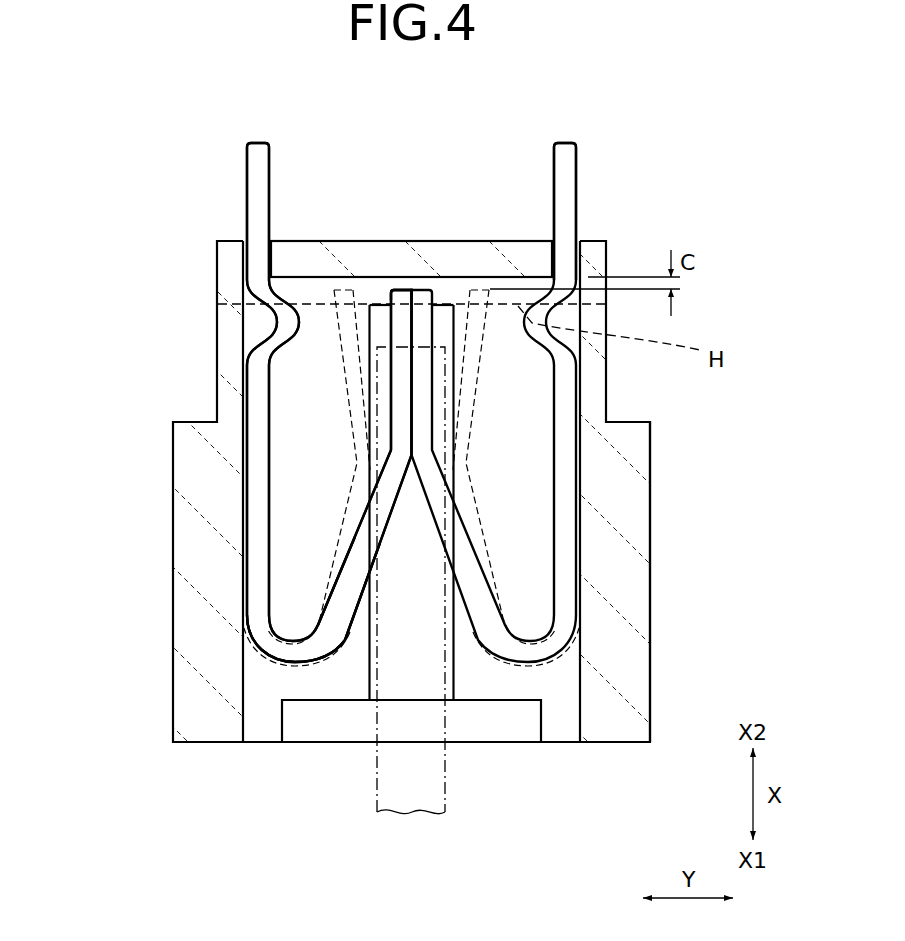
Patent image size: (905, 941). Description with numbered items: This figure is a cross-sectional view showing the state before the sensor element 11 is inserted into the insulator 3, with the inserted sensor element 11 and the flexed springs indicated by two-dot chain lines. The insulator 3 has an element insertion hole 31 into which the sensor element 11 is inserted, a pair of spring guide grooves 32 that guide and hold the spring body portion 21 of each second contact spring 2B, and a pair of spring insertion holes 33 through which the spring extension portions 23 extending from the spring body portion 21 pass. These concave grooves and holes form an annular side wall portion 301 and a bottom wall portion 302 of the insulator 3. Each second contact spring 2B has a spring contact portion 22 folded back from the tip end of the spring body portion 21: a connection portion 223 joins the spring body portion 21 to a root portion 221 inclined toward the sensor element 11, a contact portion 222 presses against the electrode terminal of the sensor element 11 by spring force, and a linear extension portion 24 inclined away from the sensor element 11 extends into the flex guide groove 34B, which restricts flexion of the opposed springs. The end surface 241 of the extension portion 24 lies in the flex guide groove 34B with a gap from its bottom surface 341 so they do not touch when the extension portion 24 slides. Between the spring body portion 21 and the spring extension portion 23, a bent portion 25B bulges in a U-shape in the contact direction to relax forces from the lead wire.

The insulator 3 is at (656, 660).
The side wall portion 301 is at (607, 460).
The bottom wall portion 302 is at (526, 257).
The element insertion hole 31 is at (438, 572).
The spring guide groove 32 is at (528, 405).
The spring insertion hole 33 is at (560, 248).
The bottom surface 341 is at (313, 280).
The flex guide groove 34B is at (451, 287).
The second contact spring 2B is at (259, 656).
The spring body portion 21 is at (260, 488).
The spring contact portion 22 is at (370, 535).
The root portion 221 is at (340, 595).
The contact portion 222 is at (400, 448).
The connection portion 223 is at (290, 652).
The spring extension portion 23 is at (260, 162).
The extension portion 24 is at (400, 333).
The end surface 241 is at (399, 287).
The bent portion 25B is at (283, 318).
The sensor element 11 is at (413, 780).